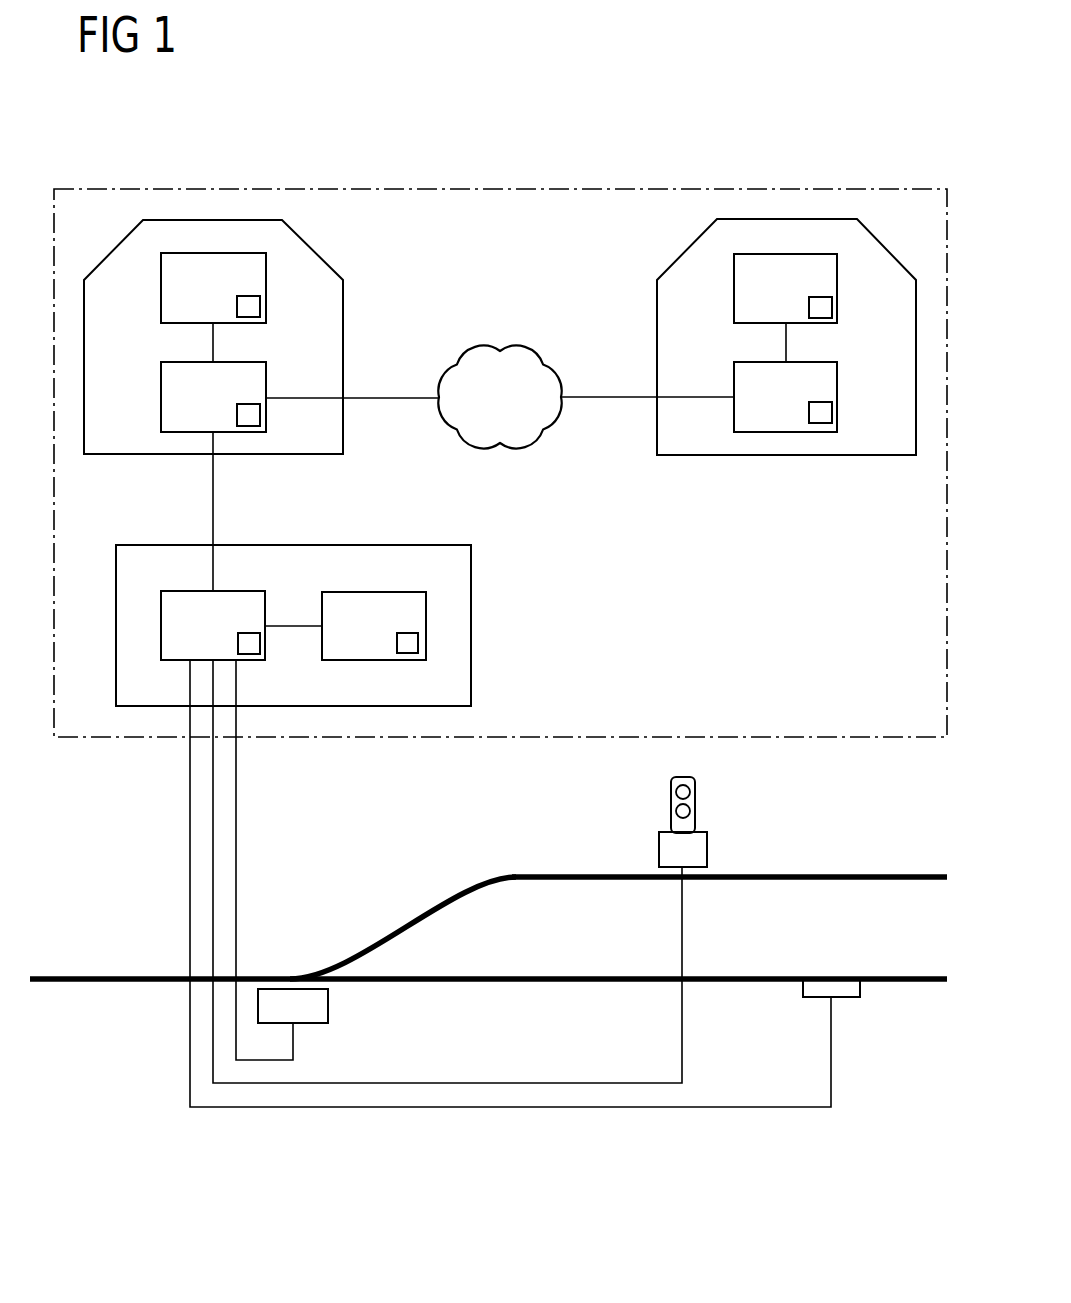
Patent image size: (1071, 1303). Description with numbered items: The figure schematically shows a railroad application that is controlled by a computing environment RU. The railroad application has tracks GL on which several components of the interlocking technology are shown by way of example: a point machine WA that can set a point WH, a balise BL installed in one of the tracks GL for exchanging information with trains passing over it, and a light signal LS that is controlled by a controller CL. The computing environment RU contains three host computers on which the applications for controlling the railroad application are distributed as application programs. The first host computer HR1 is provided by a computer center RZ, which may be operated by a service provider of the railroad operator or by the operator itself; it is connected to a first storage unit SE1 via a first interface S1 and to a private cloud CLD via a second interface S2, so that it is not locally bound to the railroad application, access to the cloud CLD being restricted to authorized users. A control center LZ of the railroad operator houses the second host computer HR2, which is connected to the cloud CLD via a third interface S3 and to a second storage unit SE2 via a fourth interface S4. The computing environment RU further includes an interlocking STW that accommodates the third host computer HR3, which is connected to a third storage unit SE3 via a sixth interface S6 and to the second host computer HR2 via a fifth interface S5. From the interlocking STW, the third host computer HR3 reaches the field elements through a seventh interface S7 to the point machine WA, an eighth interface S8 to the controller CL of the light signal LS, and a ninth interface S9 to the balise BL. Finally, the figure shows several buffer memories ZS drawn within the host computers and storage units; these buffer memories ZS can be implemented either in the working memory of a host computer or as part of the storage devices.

The computing environment RU is at (511, 187).
The control center LZ is at (312, 238).
The computer center RZ is at (686, 240).
The private cloud CLD is at (499, 337).
The first storage unit SE1 is at (785, 288).
The second storage unit SE2 is at (213, 288).
The third storage unit SE3 is at (374, 626).
The first host computer HR1 is at (785, 397).
The second host computer HR2 is at (213, 397).
The third host computer HR3 is at (213, 625).
The buffer memory ZS is at (261, 306).
The first interface S1 is at (788, 343).
The second interface S2 is at (611, 395).
The third interface S3 is at (385, 396).
The fourth interface S4 is at (211, 345).
The fifth interface S5 is at (215, 503).
The sixth interface S6 is at (292, 622).
The seventh interface S7 is at (234, 805).
The eighth interface S8 is at (211, 850).
The ninth interface S9 is at (188, 895).
The interlocking STW is at (472, 622).
The tracks GL is at (556, 873).
The point WH is at (289, 960).
The point machine WA is at (329, 1008).
The light signal LS is at (696, 800).
The controller CL is at (708, 848).
The balise BL is at (846, 998).